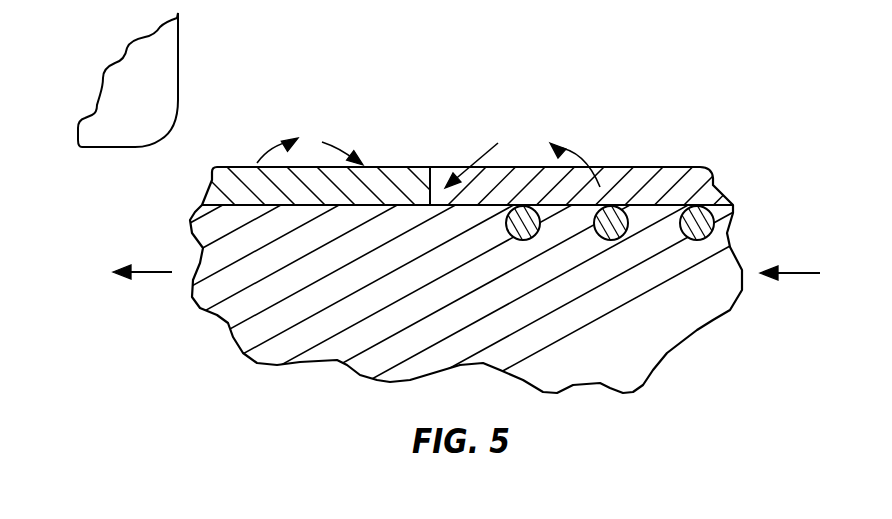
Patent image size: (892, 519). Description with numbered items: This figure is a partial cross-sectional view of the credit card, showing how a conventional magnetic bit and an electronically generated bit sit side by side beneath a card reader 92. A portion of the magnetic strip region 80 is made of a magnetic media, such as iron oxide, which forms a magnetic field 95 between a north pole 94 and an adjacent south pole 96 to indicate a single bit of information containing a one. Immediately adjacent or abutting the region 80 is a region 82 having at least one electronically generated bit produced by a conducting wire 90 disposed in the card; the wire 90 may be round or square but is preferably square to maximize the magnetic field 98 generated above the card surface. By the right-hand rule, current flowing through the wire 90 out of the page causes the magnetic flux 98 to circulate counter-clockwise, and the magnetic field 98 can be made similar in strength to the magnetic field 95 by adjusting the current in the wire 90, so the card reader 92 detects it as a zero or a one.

The magnetic strip region 80 is at (212, 182).
The region 82 is at (623, 173).
The wire 90 is at (513, 208).
The card reader 92 is at (149, 123).
The north pole 94 is at (243, 180).
The magnetic field 95 is at (322, 142).
The south pole 96 is at (377, 168).
The magnetic field 98 is at (460, 165).